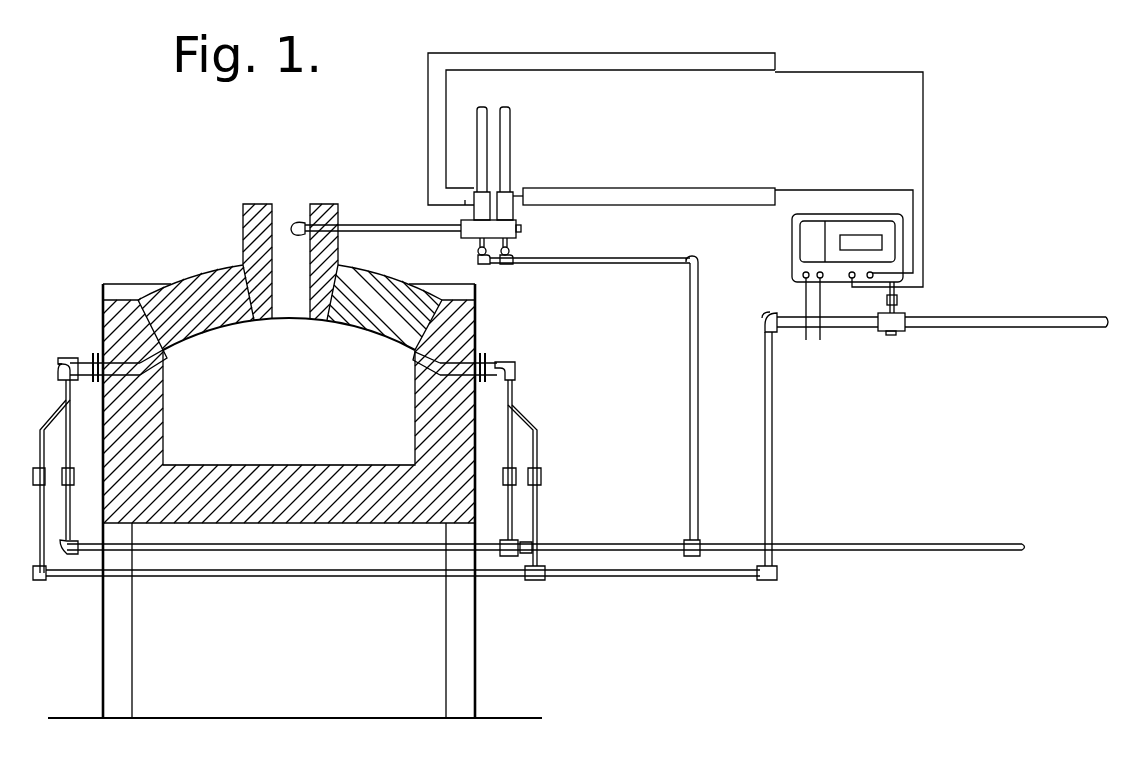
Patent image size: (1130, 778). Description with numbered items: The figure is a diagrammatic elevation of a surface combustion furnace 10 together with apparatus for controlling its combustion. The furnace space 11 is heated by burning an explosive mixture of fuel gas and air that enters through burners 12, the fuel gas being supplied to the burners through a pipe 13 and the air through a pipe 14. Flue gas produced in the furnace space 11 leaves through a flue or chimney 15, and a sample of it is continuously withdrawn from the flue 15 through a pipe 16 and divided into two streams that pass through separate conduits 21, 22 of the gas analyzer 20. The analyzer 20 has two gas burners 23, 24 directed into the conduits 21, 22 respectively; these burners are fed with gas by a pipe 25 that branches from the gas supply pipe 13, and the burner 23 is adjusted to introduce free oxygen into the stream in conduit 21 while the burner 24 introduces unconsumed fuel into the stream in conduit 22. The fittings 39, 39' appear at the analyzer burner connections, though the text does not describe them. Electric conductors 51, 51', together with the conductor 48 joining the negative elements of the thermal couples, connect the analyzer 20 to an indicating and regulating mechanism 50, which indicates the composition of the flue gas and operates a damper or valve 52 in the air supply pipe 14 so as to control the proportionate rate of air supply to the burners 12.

The surface combustion furnace 10 is at (100, 316).
The furnace space 11 is at (289, 423).
The burners 12 is at (98, 380).
The gas supply pipe 13 is at (935, 547).
The air supply pipe 14 is at (1066, 322).
The flue or chimney 15 is at (272, 222).
The pipe 16 is at (370, 226).
The gas analyzer 20 is at (516, 231).
The conduit 21 is at (471, 163).
The conduit 22 is at (518, 163).
The gas burner 23 is at (478, 250).
The gas burner 24 is at (512, 250).
The pipe 25 is at (696, 348).
The elbow fitting 39 is at (467, 268).
The elbow fitting 39' is at (521, 270).
The conductor 48 is at (568, 52).
The indicating and regulating mechanism 50 is at (790, 243).
The electric conductor 51 is at (610, 104).
The electric conductor 51' is at (718, 230).
The damper or valve 52 is at (898, 310).